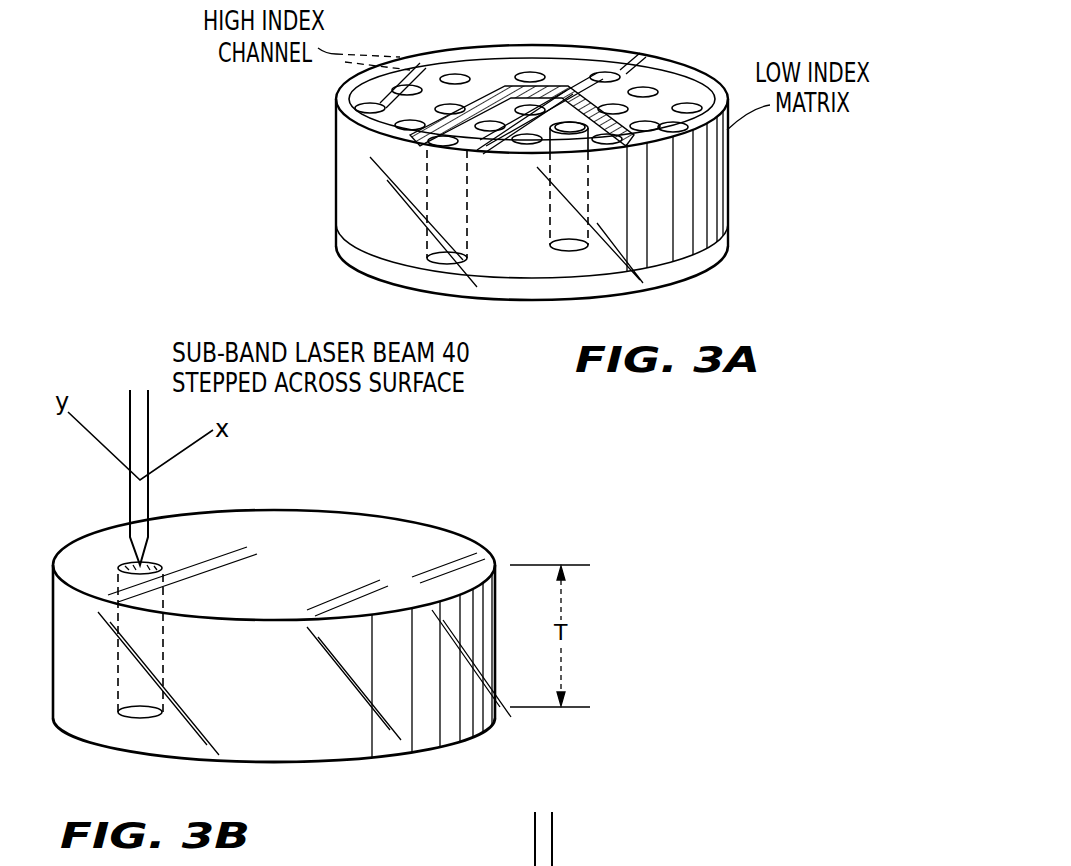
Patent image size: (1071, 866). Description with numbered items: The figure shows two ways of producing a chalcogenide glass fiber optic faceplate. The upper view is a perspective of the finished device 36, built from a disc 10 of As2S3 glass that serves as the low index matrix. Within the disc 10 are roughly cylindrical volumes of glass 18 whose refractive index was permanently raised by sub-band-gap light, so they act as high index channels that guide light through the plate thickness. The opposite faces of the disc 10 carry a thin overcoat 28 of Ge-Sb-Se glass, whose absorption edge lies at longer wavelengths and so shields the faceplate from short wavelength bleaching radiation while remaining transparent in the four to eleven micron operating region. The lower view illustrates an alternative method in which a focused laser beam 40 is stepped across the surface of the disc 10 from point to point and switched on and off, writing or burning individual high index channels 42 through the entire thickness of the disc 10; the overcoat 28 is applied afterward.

In FIG. 3A, the disc 10 is at (337, 197).
In FIG. 3B, the disc 10 is at (322, 696).
In FIG. 3A, the cylindrical volume of glass 18 is at (549, 227).
In FIG. 3A, the overcoat 28 is at (337, 128).
In FIG. 3A, the finished device 36 is at (302, 108).
In FIG. 3B, the laser beam 40 is at (143, 430).
In FIG. 3B, the high index channels 42 is at (160, 668).